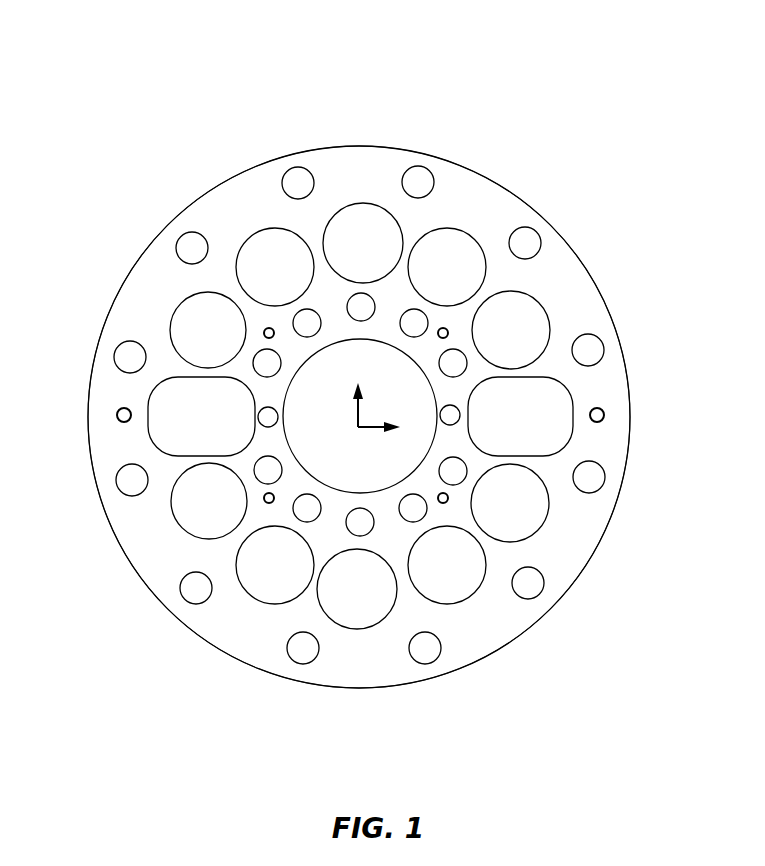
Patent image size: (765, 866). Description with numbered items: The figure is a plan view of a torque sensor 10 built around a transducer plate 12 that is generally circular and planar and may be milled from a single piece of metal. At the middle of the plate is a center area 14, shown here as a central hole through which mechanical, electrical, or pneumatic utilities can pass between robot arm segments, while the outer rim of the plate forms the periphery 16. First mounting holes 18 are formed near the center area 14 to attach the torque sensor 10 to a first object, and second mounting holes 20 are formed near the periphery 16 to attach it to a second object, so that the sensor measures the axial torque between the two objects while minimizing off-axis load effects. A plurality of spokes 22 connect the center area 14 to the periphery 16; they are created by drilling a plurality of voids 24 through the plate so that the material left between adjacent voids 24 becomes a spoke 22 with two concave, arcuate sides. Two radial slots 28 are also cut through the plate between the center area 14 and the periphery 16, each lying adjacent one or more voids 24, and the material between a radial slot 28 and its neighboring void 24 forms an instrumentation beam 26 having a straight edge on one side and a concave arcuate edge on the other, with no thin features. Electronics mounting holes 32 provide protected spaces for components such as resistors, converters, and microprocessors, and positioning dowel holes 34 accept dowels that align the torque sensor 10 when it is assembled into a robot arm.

The torque sensor 10 is at (535, 75).
The transducer plate 12 is at (387, 288).
The center area 14 is at (369, 493).
The periphery 16 is at (585, 292).
The first mounting holes 18 is at (448, 352).
The second mounting holes 20 is at (602, 343).
The spokes 22 is at (247, 300).
The voids 24 is at (440, 265).
The instrumentation beam 26 is at (200, 460).
The radial slots 28 is at (515, 423).
The electronics mounting holes 32 is at (263, 333).
The positioning dowel holes 34 is at (603, 410).